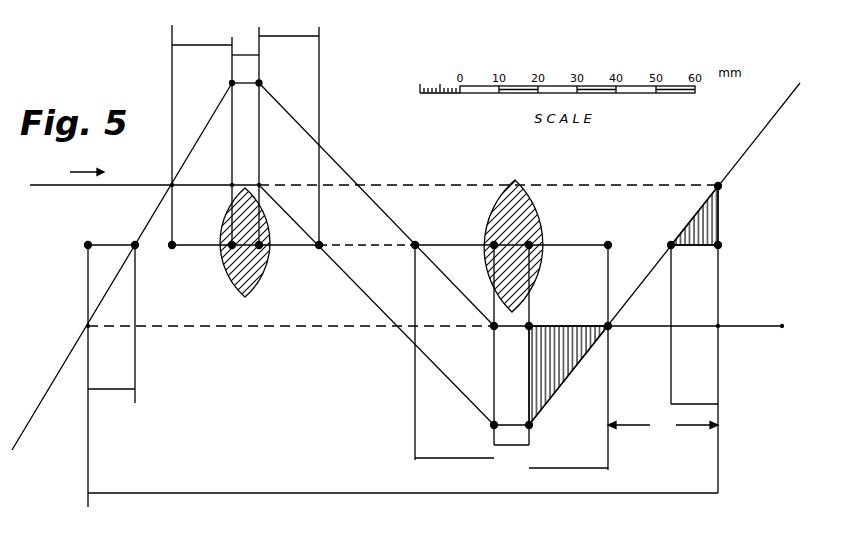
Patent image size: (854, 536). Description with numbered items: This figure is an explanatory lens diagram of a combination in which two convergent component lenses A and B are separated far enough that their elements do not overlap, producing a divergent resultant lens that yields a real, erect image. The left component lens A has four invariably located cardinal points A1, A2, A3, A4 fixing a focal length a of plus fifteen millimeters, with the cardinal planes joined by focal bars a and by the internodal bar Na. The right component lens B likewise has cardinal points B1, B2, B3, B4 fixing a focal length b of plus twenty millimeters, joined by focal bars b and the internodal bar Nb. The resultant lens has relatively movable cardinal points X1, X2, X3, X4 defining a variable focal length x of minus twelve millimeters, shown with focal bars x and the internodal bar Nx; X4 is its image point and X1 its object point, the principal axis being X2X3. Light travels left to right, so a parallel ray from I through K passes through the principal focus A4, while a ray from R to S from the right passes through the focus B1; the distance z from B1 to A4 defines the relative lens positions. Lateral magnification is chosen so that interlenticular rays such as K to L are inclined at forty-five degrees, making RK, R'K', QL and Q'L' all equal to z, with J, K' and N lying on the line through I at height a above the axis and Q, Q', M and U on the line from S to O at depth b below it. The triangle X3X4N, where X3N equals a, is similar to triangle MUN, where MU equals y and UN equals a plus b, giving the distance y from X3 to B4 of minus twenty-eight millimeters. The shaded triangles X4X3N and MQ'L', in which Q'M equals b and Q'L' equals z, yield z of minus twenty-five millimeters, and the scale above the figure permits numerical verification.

The incident parallel ray I is at (38, 182).
The ray point J is at (170, 183).
The ray point K is at (240, 173).
The ray point K' is at (269, 173).
The ray point R is at (220, 83).
The ray point R' is at (270, 81).
The internodal bar of lens A Na is at (245, 53).
The focal length of lens A a is at (206, 44).
The left component lens A is at (255, 281).
The cardinal point A1 of lens A A1 is at (170, 257).
The cardinal point A2 of lens A A2 is at (232, 257).
The cardinal point A3 of lens A A3 is at (261, 257).
The cardinal point A4 of lens A A4 is at (318, 257).
The cardinal point X1 of resultant lens X1 is at (132, 235).
The cardinal point X2 of resultant lens X2 is at (88, 235).
The cardinal point X3 of resultant lens X3 is at (720, 258).
The cardinal point X4 of resultant lens X4 is at (674, 258).
The right component lens B is at (505, 190).
The cardinal point B1 of lens B B1 is at (416, 235).
The cardinal point B2 of lens B B2 is at (494, 235).
The cardinal point B3 of lens B B3 is at (529, 235).
The cardinal point B4 of lens B B4 is at (608, 235).
The ray point S is at (86, 326).
The ray point Q is at (484, 340).
The ray point Q' is at (543, 340).
The ray point M is at (618, 341).
The ray point L is at (483, 425).
The ray point L' is at (539, 425).
The ray point N is at (722, 186).
The ray point U is at (720, 328).
The line end point O is at (791, 326).
The internodal bar of lens B Nb is at (507, 447).
The focal length of lens B b is at (468, 457).
The focal length of resultant lens x is at (122, 388).
The distance X3B4 y is at (663, 430).
The distance B1A4 z is at (360, 241).
The internodal bar of resultant lens Nx is at (263, 491).